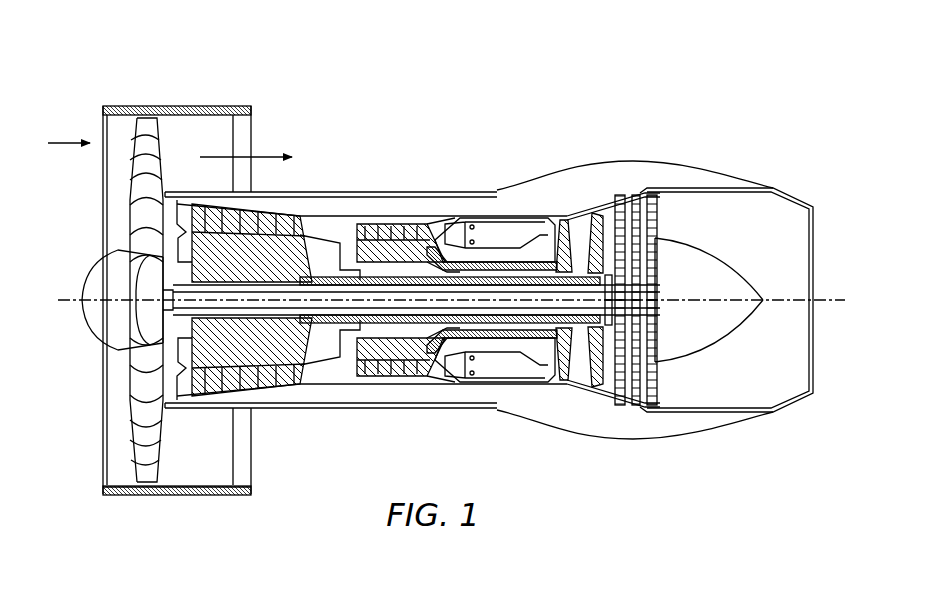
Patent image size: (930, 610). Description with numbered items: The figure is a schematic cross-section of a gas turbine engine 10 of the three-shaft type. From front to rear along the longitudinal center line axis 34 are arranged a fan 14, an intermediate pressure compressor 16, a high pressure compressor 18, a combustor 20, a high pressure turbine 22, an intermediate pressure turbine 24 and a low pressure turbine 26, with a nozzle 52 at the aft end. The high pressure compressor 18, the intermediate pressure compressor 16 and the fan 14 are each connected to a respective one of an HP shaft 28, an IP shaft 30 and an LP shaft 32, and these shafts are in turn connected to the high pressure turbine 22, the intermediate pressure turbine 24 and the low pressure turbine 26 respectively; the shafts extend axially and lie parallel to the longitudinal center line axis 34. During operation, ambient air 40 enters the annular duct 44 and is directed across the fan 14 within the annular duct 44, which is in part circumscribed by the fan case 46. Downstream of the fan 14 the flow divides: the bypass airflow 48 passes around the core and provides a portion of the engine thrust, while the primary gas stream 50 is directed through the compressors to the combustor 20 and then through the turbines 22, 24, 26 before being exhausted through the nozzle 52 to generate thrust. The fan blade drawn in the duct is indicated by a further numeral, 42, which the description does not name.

The gas turbine engine 10 is at (590, 40).
The fan 14 is at (147, 470).
The intermediate pressure compressor 16 is at (275, 245).
The high pressure compressor 18 is at (396, 370).
The combustor 20 is at (482, 372).
The high pressure turbine 22 is at (563, 217).
The intermediate pressure turbine 24 is at (598, 210).
The low pressure turbine 26 is at (648, 205).
The HP shaft 28 is at (505, 330).
The IP shaft 30 is at (577, 345).
The LP shaft 32 is at (598, 335).
The longitudinal center line axis 34 is at (836, 297).
The ambient air 40 is at (75, 143).
The fan blade 42 is at (122, 232).
The annular duct 44 is at (237, 460).
The fan case 46 is at (190, 496).
The bypass airflow 48 is at (277, 157).
The primary gas stream 50 is at (355, 225).
The nozzle 52 is at (787, 195).